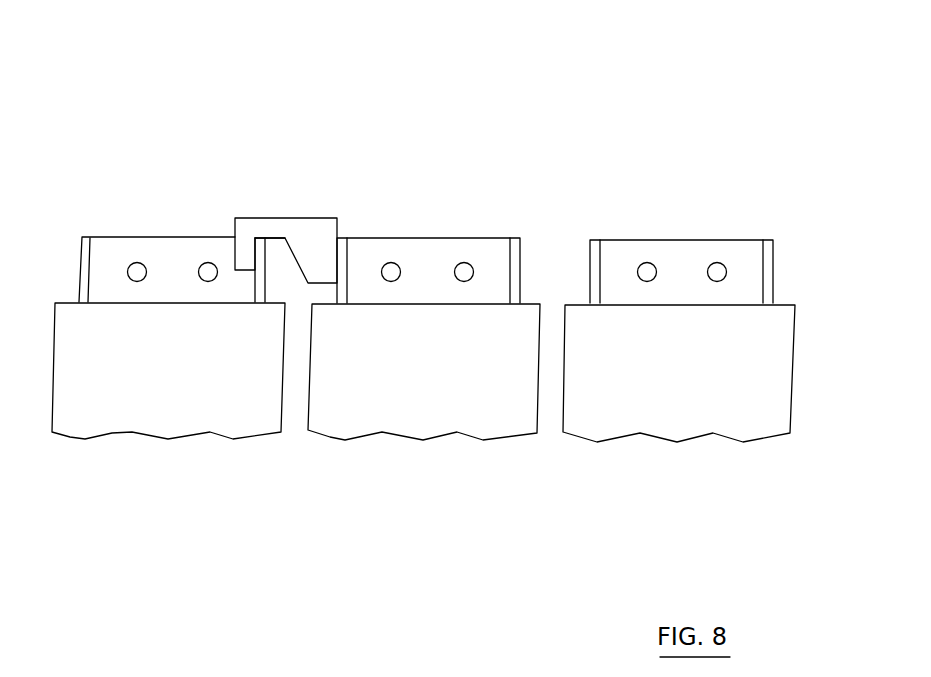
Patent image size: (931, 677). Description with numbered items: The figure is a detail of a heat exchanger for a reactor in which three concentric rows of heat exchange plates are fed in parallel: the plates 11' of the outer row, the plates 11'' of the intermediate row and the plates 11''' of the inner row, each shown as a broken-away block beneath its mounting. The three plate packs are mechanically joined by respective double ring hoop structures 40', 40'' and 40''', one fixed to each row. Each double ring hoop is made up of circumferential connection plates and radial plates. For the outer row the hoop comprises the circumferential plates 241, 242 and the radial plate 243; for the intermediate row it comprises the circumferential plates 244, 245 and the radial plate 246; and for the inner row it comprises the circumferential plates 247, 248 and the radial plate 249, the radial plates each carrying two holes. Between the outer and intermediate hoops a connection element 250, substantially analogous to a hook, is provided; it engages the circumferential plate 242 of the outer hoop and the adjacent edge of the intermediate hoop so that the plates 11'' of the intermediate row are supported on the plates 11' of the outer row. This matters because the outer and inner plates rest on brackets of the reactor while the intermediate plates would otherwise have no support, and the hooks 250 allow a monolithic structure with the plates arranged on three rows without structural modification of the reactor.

The first hoop structure 40' is at (183, 210).
The second hoop structure 40'' is at (463, 159).
The third hoop structure 40''' is at (700, 164).
The plates of outer row 11' is at (168, 416).
The plates of intermediate row 11'' is at (424, 419).
The plates of inner row 11''' is at (679, 412).
The circumferential plate 241 is at (83, 263).
The circumferential plate 242 is at (257, 285).
The radial plate 243 is at (169, 248).
The circumferential plate 244 is at (345, 262).
The circumferential plate 245 is at (517, 258).
The radial plate 246 is at (438, 248).
The circumferential plate 247 is at (593, 258).
The circumferential plate 248 is at (768, 257).
The radial plate 249 is at (682, 248).
The connection element 250 is at (287, 228).